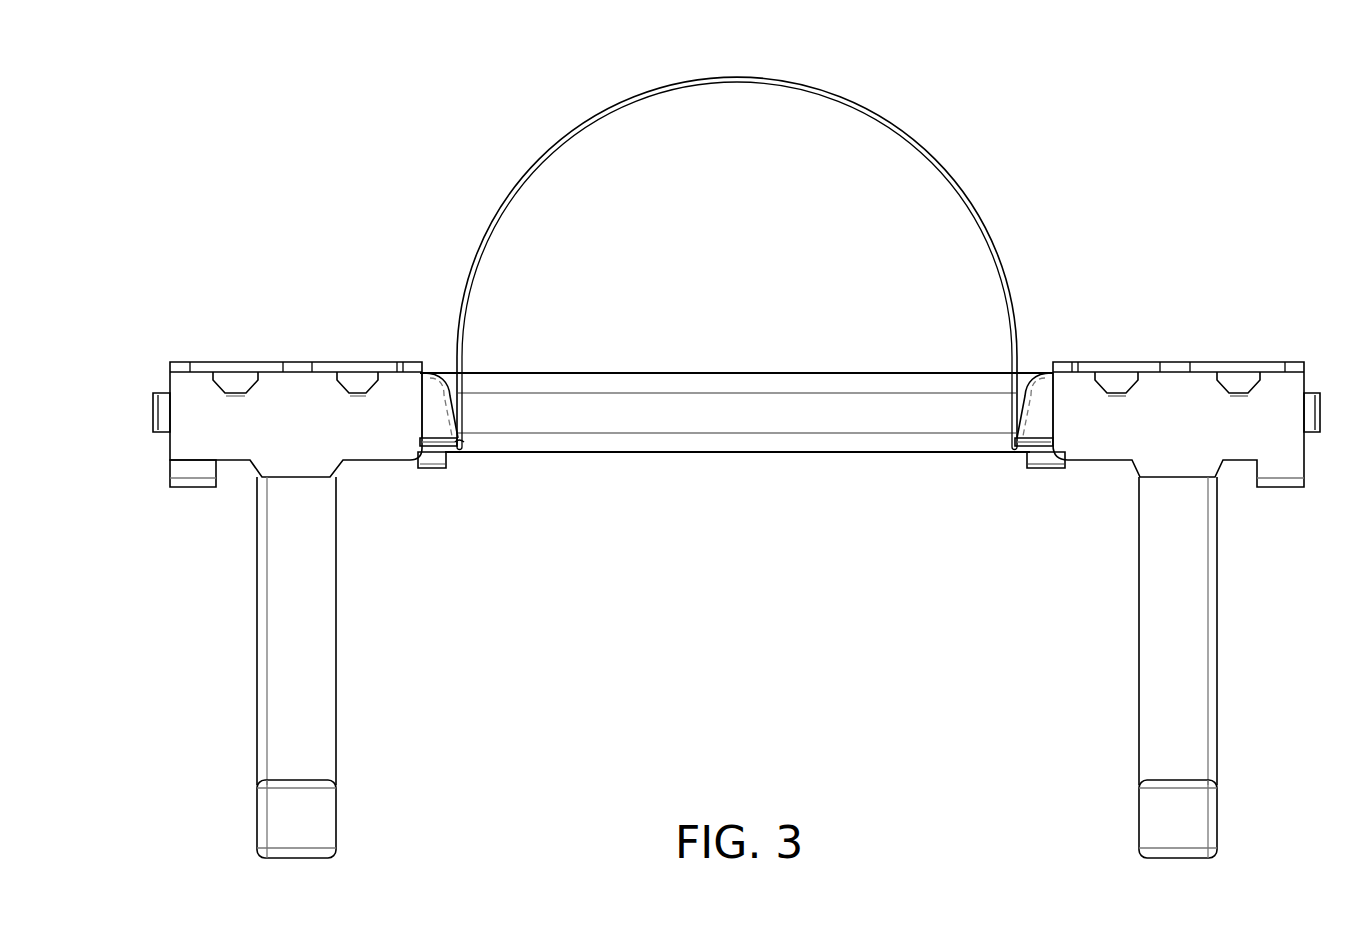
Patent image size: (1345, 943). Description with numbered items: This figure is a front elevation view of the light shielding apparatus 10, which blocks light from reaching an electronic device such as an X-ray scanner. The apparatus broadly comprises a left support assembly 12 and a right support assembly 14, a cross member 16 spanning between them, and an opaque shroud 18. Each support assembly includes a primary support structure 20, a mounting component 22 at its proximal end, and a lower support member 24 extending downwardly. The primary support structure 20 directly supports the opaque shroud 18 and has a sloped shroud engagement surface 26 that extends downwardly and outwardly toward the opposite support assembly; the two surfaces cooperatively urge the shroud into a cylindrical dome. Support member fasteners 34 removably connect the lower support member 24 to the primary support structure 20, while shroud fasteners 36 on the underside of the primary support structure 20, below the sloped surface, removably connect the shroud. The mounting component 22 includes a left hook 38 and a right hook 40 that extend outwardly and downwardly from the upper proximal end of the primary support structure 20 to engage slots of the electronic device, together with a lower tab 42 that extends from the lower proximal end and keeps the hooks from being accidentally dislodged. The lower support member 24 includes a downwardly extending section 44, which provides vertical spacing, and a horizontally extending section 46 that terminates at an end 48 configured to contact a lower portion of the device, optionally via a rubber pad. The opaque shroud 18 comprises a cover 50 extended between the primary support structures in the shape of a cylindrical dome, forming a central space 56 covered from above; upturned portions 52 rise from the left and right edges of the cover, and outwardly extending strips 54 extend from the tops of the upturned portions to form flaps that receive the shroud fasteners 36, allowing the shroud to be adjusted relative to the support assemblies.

The light shielding apparatus 10 is at (397, 107).
The left support assembly 12 is at (225, 316).
The right support assembly 14 is at (1246, 295).
The cross member 16 is at (621, 436).
The opaque shroud 18 is at (539, 116).
The primary support structure 20 is at (283, 433).
The mounting component 22 is at (181, 348).
The lower support member 24 is at (383, 650).
The sloped shroud engagement surface 26 is at (447, 394).
The support member fastener 34 is at (152, 410).
The shroud fastener 36 is at (423, 470).
The left hook 38 is at (350, 377).
The right hook 40 is at (245, 374).
The lower tab 42 is at (178, 470).
The downwardly extending section 44 is at (315, 697).
The horizontally extending section 46 is at (350, 828).
The end 48 is at (315, 808).
The cover 50 is at (890, 118).
The upturned portion 52 is at (452, 456).
The outwardly extending strip 54 is at (463, 431).
The central space 56 is at (772, 253).